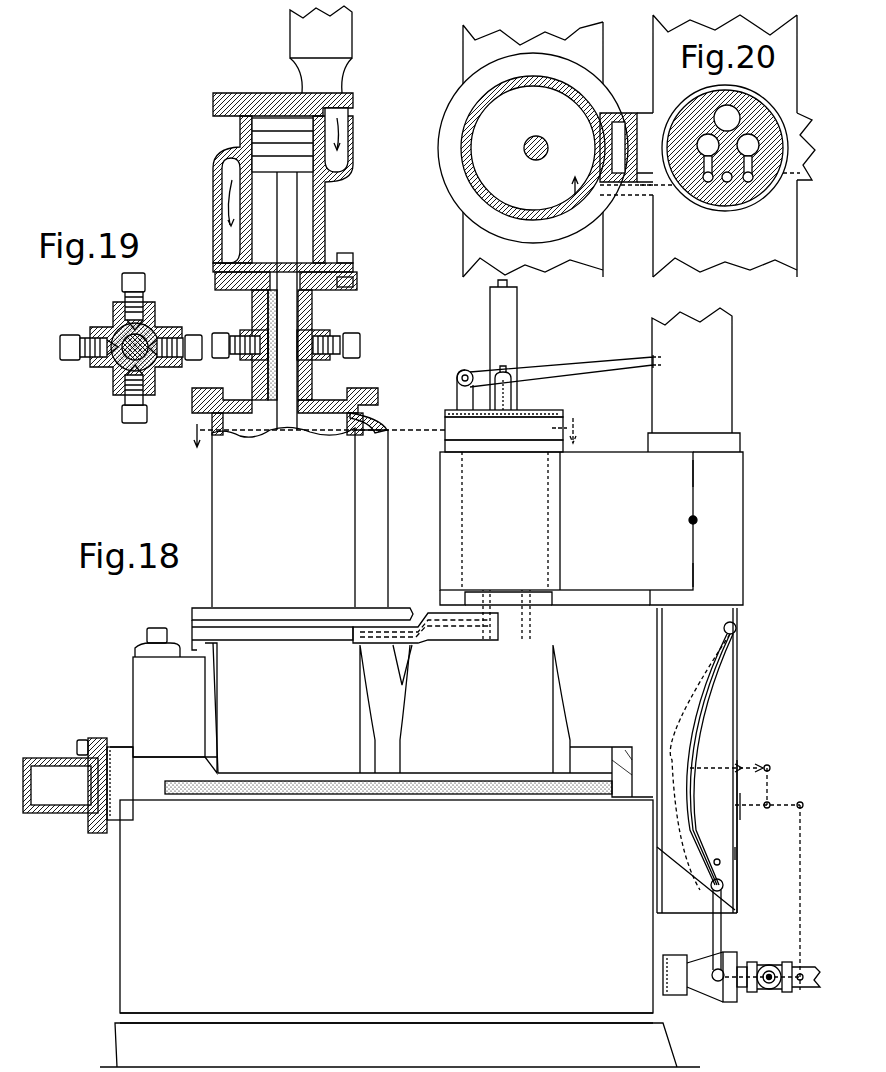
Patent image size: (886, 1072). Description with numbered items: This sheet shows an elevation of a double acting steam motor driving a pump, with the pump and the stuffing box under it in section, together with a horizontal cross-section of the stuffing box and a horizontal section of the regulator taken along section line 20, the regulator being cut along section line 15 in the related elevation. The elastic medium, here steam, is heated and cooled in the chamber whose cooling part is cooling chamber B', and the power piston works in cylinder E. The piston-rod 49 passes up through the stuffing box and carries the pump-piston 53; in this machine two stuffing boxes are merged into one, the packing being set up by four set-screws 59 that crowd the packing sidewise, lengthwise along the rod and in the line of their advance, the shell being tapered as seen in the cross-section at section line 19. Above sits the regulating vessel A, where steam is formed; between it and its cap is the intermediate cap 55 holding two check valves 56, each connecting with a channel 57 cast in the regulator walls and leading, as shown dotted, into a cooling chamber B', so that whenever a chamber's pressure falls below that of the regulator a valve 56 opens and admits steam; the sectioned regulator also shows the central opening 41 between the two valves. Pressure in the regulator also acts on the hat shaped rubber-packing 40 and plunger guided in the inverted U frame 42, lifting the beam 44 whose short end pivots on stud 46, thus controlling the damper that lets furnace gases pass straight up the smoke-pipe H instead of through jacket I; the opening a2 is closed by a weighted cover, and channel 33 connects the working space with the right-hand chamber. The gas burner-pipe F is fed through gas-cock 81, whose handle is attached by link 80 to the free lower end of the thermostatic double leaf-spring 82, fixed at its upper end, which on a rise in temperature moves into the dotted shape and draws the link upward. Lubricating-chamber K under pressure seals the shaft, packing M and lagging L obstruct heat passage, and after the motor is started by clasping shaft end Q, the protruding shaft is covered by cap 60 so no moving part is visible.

In FIG. 18, the pump-piston 53 is at (282, 145).
In FIG. 18, the piston-rod 49 is at (282, 345).
In FIG. 18, the set-screws 59 is at (216, 343).
In FIG. 19, the set-screws 59 is at (131, 348).
In FIG. 18, the section line 19 is at (360, 346).
In FIG. 18, the section line 20 is at (387, 432).
In FIG. 18, the inverted U frame 42 is at (503, 345).
In FIG. 18, the beam 44 is at (566, 371).
In FIG. 18, the stud 46 is at (458, 395).
In FIG. 18, the opening a2 is at (512, 395).
In FIG. 18, the hat shaped rubber-packing 40 is at (563, 416).
In FIG. 18, the intermediate cap 55 is at (526, 427).
In FIG. 18, the channel 57 is at (486, 580).
In FIG. 20, the channel 57 is at (752, 180).
In FIG. 18, the cap 60 is at (60, 757).
In FIG. 18, the gas-cock 81 is at (688, 760).
In FIG. 18, the double leaf-spring 82 is at (746, 877).
In FIG. 18, the link 80 is at (733, 914).
In FIG. 20, the central port 41 is at (727, 118).
In FIG. 20, the check valves 56 is at (728, 158).
In FIG. 20, the channel 33 is at (612, 142).
In FIG. 20, the section line 15 is at (679, 181).
In FIG. 18, the cylinder E is at (300, 517).
In FIG. 20, the cylinder E is at (472, 148).
In FIG. 18, the cooling chamber B' is at (391, 708).
In FIG. 20, the cooling chamber B' is at (639, 146).
In FIG. 18, the smoke-pipe H is at (694, 380).
In FIG. 18, the jacket I is at (591, 528).
In FIG. 18, the regulating vessel A is at (504, 513).
In FIG. 20, the regulating vessel A is at (748, 200).
In FIG. 18, the lubricating-chamber K is at (175, 700).
In FIG. 18, the shaft end Q is at (78, 785).
In FIG. 18, the packing M is at (165, 788).
In FIG. 18, the lagging L is at (400, 933).
In FIG. 18, the gas burner-pipe F is at (660, 960).